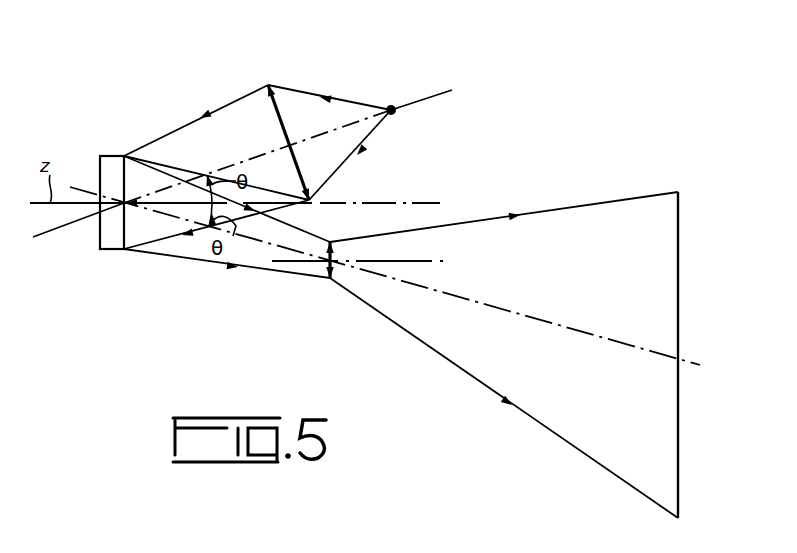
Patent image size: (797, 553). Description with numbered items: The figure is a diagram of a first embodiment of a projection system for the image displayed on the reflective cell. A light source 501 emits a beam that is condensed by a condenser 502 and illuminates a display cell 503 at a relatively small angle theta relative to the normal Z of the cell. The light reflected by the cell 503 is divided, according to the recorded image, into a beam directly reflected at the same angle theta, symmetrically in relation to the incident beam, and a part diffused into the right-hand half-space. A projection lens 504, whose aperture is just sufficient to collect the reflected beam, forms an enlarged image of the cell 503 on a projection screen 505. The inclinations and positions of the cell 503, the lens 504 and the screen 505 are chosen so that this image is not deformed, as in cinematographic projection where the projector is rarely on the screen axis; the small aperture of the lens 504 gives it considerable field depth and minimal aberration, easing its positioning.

The light source 501 is at (392, 108).
The condenser 502 is at (270, 83).
The display cell 503 is at (110, 240).
The projection lens 504 is at (325, 276).
The projection screen 505 is at (680, 246).